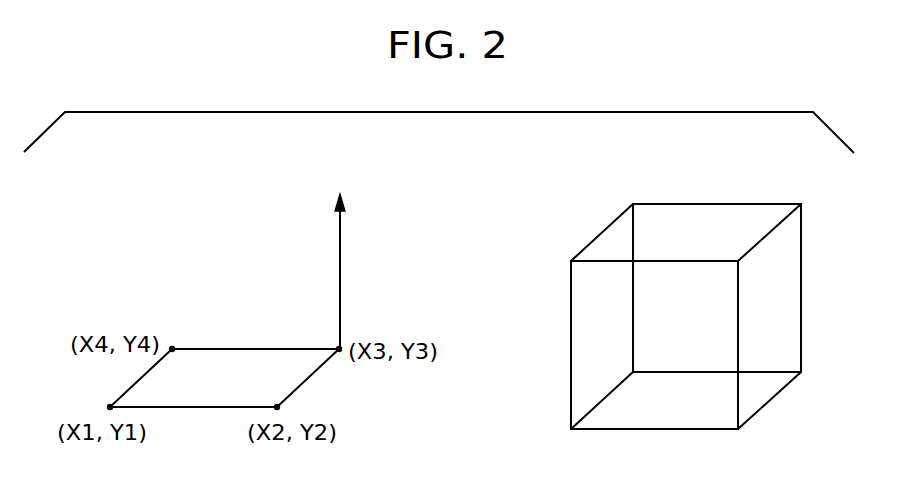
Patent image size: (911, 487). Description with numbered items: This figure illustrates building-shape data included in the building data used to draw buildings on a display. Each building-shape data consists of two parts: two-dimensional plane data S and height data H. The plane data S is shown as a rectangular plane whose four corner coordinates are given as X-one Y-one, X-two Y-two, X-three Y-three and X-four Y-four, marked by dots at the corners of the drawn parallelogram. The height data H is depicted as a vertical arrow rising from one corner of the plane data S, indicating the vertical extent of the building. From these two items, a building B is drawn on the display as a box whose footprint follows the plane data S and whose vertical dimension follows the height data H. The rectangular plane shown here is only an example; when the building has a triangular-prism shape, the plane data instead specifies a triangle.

The building B is at (721, 228).
The height data H is at (341, 244).
The two-dimensional plane data S is at (229, 372).